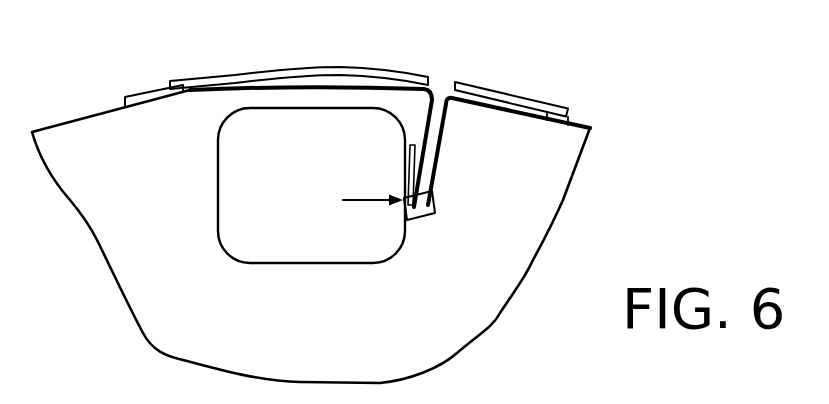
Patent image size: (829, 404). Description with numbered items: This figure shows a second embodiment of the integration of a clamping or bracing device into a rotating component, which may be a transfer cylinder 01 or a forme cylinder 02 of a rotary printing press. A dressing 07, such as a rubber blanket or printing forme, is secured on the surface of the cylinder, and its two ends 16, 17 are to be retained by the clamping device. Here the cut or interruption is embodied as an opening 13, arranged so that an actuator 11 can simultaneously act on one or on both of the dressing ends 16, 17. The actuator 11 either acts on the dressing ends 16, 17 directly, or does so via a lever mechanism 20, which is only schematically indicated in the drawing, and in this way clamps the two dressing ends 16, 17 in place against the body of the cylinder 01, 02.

The transfer cylinder 01 is at (311, 236).
The forme cylinder 02 is at (353, 346).
The dressing 07 is at (181, 93).
The actuator 11 is at (273, 224).
The opening 13 is at (447, 73).
The dressing end 16 is at (337, 83).
The dressing end 17 is at (558, 106).
The lever mechanism 20 is at (418, 220).